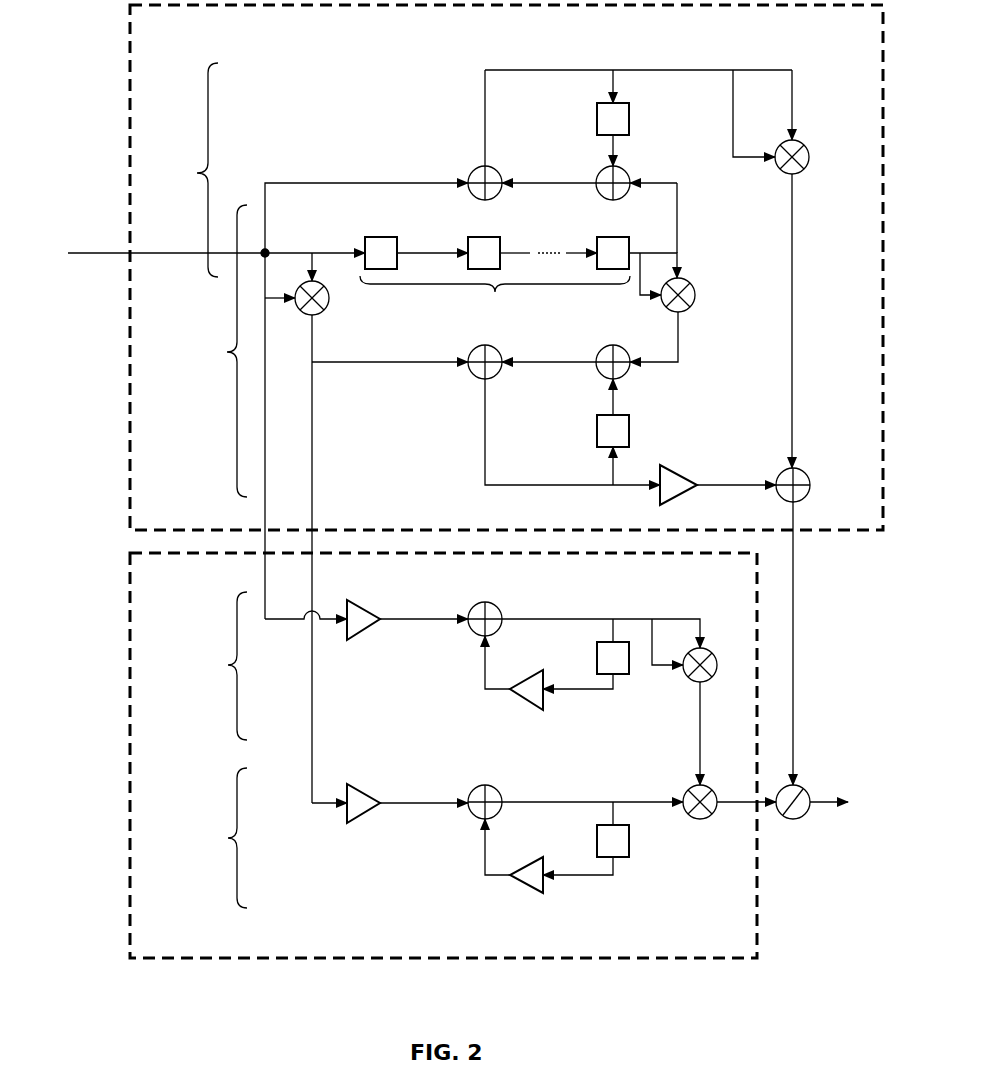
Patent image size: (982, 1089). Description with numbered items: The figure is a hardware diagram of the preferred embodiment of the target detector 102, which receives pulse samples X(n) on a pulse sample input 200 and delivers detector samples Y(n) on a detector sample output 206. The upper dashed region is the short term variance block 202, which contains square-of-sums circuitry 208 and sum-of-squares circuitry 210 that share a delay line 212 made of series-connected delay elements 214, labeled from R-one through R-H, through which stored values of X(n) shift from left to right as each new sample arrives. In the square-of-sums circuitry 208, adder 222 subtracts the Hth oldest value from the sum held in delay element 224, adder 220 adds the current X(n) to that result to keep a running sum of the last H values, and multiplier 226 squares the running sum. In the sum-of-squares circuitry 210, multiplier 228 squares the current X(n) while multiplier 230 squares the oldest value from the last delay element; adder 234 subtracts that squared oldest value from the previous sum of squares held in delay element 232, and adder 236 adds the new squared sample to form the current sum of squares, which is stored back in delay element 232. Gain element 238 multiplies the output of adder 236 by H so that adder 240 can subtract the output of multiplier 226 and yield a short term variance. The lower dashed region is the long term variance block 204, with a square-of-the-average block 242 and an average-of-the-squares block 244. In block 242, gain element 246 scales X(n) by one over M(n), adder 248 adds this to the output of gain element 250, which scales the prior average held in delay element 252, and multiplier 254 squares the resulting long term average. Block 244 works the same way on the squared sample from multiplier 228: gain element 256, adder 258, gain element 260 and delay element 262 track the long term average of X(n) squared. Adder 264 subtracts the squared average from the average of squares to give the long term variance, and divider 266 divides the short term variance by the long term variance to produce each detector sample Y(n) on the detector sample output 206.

The target detector 102 is at (91, 158).
The pulse sample input 200 is at (103, 255).
The short term variance block 202 is at (125, 70).
The long term variance block 204 is at (168, 962).
The detector sample output 206 is at (825, 805).
The square-of-sums circuitry 208 is at (185, 170).
The sum-of-squares circuitry 210 is at (215, 351).
The delay line 212 is at (495, 296).
The delay elements 214 is at (365, 237).
The adder 220 is at (472, 168).
The adder 222 is at (597, 173).
The delay element 224 is at (597, 116).
The multiplier 226 is at (805, 145).
The multiplier 228 is at (328, 306).
The multiplier 230 is at (690, 307).
The delay element 232 is at (597, 432).
The adder 234 is at (597, 352).
The adder 236 is at (470, 352).
The gain element 238 is at (675, 470).
The adder 240 is at (813, 470).
The square-of-the-average block 242 is at (215, 666).
The average-of-the-squares block 244 is at (215, 838).
The gain element 246 is at (370, 590).
The adder 248 is at (500, 608).
The gain element 250 is at (527, 662).
The delay element 252 is at (622, 674).
The multiplier 254 is at (712, 678).
The gain element 256 is at (362, 784).
The adder 258 is at (500, 791).
The gain element 260 is at (527, 847).
The delay element 262 is at (622, 857).
The adder 264 is at (710, 820).
The divider 266 is at (808, 787).